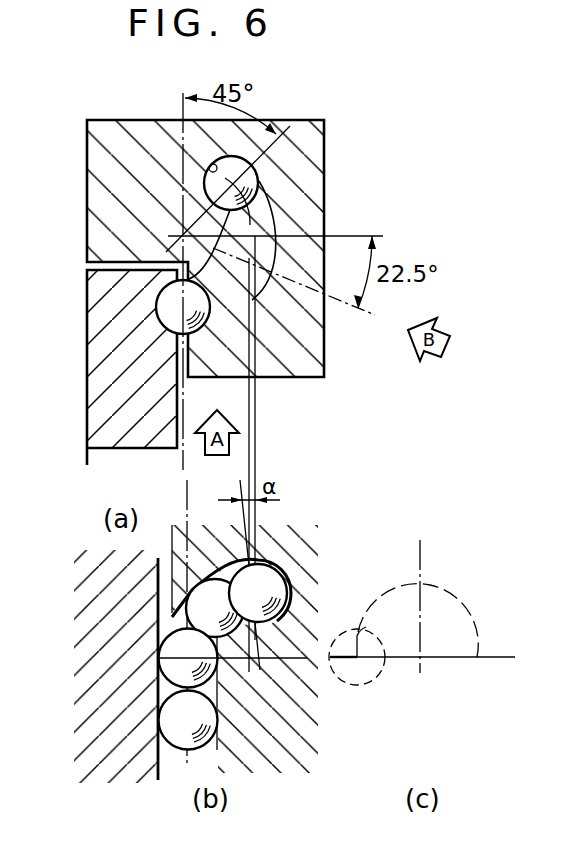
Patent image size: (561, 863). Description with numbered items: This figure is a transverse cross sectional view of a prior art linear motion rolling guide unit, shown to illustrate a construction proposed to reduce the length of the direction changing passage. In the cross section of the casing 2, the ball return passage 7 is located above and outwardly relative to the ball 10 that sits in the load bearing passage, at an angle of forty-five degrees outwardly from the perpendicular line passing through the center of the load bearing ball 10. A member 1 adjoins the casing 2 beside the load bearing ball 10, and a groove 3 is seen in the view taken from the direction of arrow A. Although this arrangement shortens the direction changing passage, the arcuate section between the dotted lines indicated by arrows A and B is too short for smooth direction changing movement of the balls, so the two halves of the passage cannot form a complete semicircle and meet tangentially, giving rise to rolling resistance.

The first member (base block) 1 is at (100, 417).
The casing 2 is at (333, 152).
The groove / race 3 is at (278, 522).
The ball return passage 7 is at (213, 157).
The ball 10 is at (157, 303).